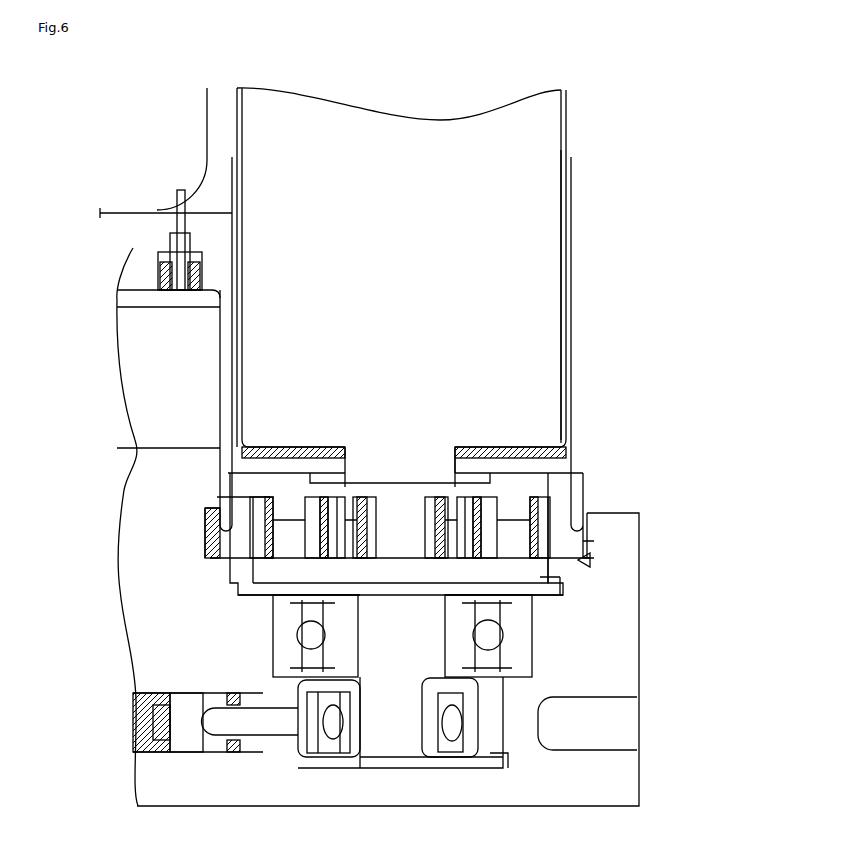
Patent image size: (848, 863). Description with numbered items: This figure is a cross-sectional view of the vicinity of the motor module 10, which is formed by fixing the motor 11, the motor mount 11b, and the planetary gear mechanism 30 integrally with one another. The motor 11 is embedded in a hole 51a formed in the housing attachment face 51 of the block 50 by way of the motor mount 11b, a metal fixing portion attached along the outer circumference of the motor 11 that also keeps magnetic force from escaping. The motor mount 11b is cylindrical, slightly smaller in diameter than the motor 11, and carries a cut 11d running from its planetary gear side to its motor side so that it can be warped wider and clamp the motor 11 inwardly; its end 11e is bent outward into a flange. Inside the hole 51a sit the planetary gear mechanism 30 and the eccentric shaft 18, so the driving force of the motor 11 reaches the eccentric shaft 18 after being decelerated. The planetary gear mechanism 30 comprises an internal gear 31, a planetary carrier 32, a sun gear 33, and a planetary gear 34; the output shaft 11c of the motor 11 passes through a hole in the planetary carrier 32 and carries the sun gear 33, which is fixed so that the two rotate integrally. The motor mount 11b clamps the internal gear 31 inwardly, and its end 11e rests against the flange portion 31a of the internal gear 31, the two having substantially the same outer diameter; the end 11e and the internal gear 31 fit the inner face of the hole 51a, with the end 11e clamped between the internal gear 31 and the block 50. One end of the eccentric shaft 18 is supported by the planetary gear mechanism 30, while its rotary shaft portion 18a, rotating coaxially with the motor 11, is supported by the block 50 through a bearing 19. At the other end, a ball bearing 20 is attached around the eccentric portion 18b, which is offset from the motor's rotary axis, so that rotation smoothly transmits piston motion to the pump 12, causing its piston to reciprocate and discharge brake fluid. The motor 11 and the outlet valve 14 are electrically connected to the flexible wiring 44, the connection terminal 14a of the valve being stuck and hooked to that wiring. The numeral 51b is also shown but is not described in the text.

The motor module 10 is at (630, 302).
The motor 11 is at (418, 132).
The motor mount 11b is at (566, 352).
The output shaft 11c is at (222, 452).
The cut 11d is at (572, 197).
The end 11e is at (222, 530).
The pump 12 is at (192, 745).
The outlet valve 14 is at (137, 352).
The connection terminal 14a is at (175, 205).
The eccentric shaft 18 is at (435, 660).
The rotary shaft portion 18a is at (290, 613).
The eccentric portion 18b is at (412, 763).
The bearing 19 is at (277, 650).
The ball bearing 20 is at (348, 767).
The planetary gear mechanism 30 is at (548, 572).
The internal gear 31 is at (555, 500).
The flange portion 31a is at (222, 543).
The planetary carrier 32 is at (460, 505).
The sun gear 33 is at (452, 488).
The planetary gear 34 is at (440, 497).
The flexible wiring 44 is at (205, 142).
The block 50 is at (627, 668).
The housing attachment face 51 is at (590, 512).
The hole 51a is at (590, 560).
The lower seat 51b is at (497, 738).